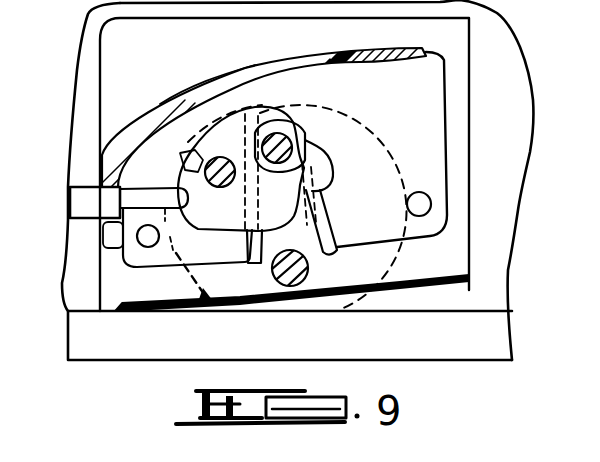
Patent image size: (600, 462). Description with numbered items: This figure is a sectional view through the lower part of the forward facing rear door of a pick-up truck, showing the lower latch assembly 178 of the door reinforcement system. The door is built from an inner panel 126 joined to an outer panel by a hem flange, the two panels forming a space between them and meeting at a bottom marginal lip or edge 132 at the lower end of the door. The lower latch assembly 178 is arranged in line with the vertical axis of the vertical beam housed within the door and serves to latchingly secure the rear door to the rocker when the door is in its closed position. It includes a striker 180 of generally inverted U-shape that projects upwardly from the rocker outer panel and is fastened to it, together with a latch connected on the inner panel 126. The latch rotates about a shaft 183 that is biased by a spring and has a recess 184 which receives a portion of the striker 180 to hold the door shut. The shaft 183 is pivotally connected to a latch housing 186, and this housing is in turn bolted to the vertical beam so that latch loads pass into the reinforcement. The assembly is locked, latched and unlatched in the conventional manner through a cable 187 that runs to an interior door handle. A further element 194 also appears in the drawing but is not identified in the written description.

The inner panel 126 is at (84, 97).
The lower latch assembly 178 is at (153, 108).
The latch housing 186 is at (242, 90).
The rail edge 194 is at (200, 80).
The recess 184 is at (313, 121).
The bottom marginal lip or edge 132 is at (218, 146).
The striker 180 is at (308, 138).
The cable 187 is at (147, 188).
The shaft 183 is at (221, 254).